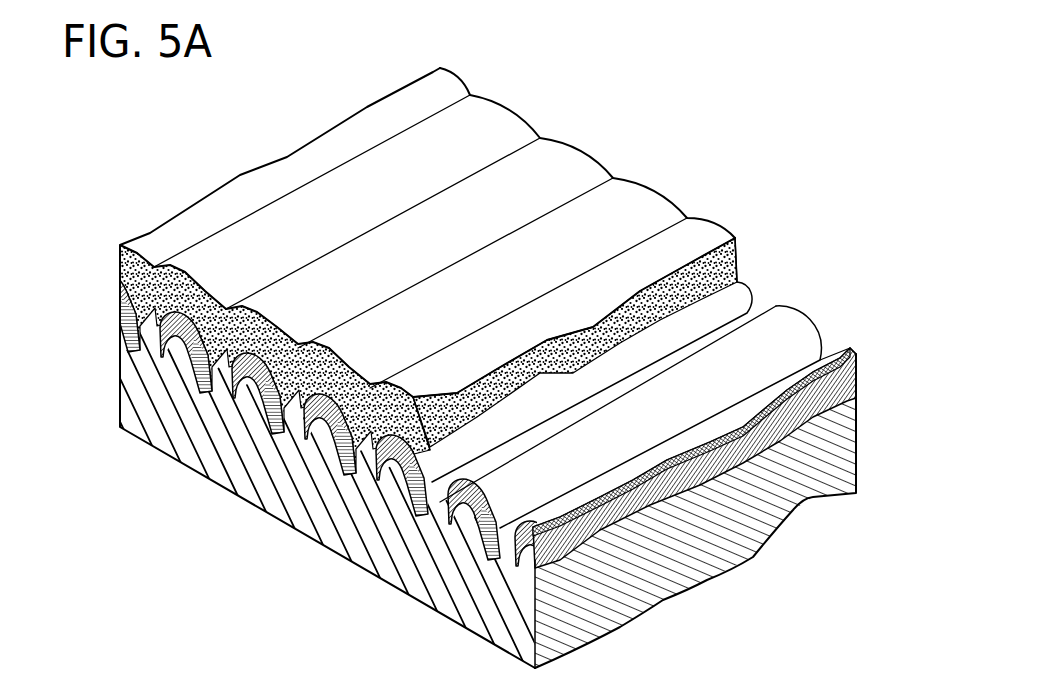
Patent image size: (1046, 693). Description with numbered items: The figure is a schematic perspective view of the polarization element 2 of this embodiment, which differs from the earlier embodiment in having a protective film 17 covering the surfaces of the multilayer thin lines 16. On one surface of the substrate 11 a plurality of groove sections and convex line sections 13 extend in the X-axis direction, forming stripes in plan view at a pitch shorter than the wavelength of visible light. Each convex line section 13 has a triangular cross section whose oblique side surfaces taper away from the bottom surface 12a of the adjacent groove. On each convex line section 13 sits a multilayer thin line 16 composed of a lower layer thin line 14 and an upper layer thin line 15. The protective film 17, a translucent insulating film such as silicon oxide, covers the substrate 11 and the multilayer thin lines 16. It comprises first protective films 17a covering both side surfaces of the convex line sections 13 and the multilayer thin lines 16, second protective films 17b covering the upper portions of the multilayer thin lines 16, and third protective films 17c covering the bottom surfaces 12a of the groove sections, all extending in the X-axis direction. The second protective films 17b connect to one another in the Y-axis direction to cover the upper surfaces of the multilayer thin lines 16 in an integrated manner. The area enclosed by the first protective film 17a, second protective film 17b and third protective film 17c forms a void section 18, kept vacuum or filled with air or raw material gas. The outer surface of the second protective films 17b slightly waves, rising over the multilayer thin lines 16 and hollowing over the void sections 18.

The polarization element 2 is at (684, 128).
The substrate 11 is at (745, 528).
The bottom surface 12a is at (423, 540).
The convex line section 13 is at (253, 422).
The lower layer thin line 14 is at (587, 540).
The upper layer thin line 15 is at (572, 515).
The multilayer thin line 16 is at (694, 511).
The protective film 17 is at (433, 283).
The first protective film 17a is at (173, 300).
The second protective film 17b is at (236, 310).
The third protective film 17c is at (135, 297).
The void section 18 is at (351, 496).